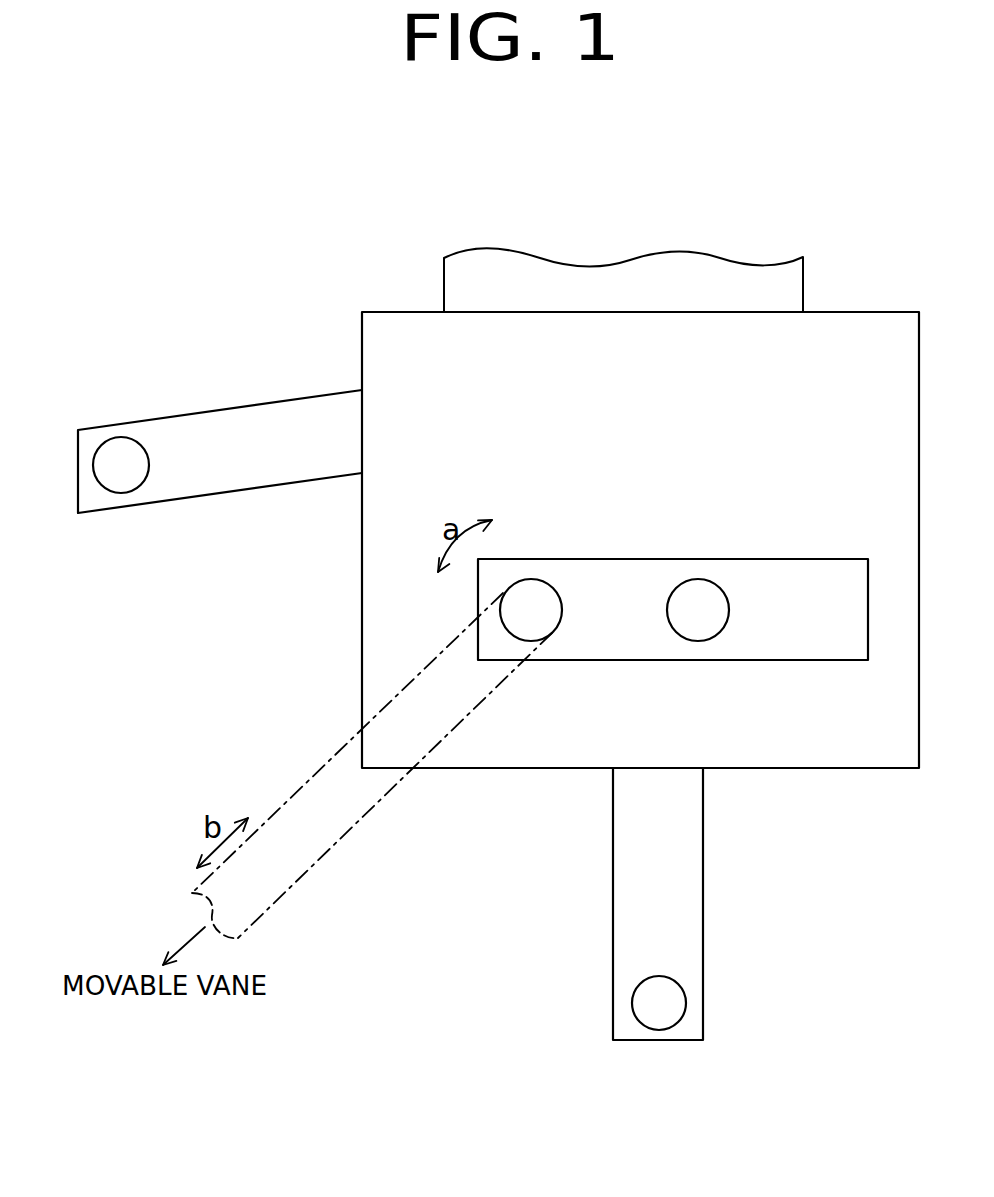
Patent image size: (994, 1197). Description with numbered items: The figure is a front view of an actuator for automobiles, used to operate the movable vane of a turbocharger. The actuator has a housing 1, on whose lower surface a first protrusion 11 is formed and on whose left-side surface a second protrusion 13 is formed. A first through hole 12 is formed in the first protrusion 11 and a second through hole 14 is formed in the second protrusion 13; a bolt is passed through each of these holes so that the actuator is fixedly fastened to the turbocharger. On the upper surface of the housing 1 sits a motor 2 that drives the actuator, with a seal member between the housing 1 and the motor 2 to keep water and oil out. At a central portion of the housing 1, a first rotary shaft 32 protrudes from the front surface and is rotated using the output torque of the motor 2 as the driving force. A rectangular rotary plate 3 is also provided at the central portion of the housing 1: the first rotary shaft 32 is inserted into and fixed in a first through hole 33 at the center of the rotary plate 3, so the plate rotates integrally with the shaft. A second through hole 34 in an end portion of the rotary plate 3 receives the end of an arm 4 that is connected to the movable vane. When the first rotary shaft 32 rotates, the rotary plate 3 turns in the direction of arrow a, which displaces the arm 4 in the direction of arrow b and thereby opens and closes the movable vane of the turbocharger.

The housing 1 is at (362, 652).
The motor 2 is at (803, 290).
The rotary plate 3 is at (783, 558).
The arm 4 is at (300, 878).
The first protrusion 11 is at (703, 938).
The first through hole 12 is at (686, 1003).
The second protrusion 13 is at (270, 488).
The second through hole 14 is at (113, 485).
The first rotary shaft 32 is at (697, 641).
The first through hole 33 is at (730, 610).
The second through hole 34 is at (562, 610).